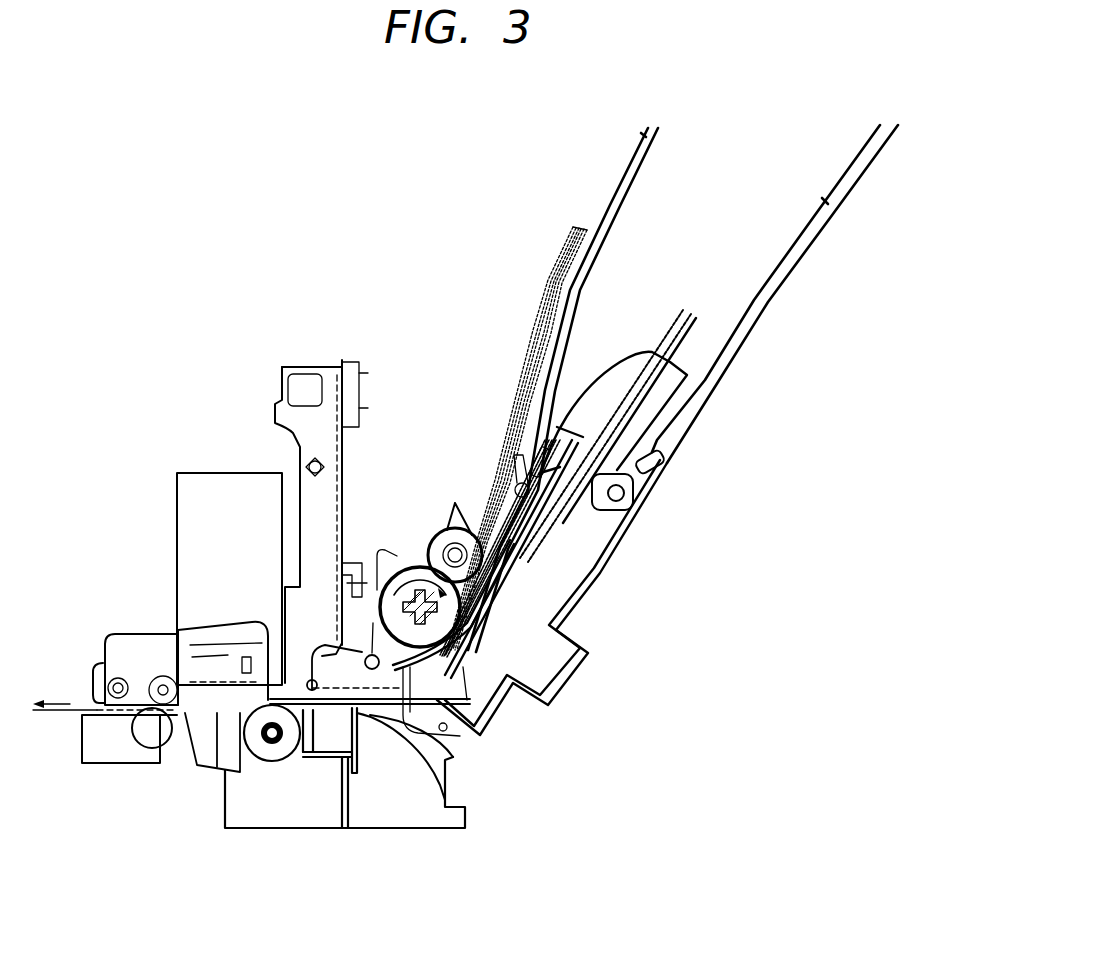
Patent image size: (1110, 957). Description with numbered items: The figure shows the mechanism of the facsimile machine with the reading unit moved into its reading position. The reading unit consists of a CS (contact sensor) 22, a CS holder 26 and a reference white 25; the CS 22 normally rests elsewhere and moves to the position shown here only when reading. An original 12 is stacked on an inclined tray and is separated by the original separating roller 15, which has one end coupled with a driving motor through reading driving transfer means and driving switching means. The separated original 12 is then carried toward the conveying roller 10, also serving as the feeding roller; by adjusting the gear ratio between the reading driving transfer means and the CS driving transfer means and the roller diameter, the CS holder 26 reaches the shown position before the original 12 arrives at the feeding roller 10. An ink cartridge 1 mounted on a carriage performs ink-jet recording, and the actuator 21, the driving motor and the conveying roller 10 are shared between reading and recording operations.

The ink cartridge 1 is at (200, 483).
The conveying roller 10 is at (287, 750).
The original 12 is at (543, 298).
The original separating roller 15 is at (438, 537).
The actuator 21 is at (443, 797).
The CS (contact sensor) 22 is at (217, 692).
The reference white 25 is at (220, 770).
The CS holder 26 is at (213, 637).